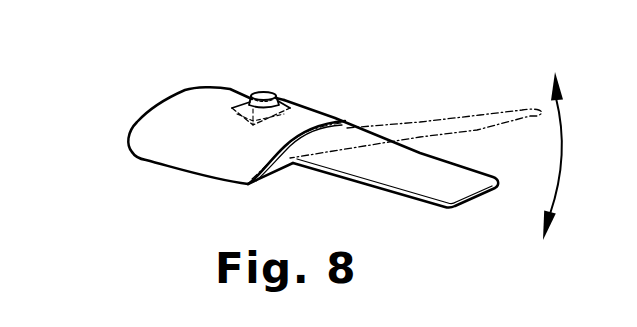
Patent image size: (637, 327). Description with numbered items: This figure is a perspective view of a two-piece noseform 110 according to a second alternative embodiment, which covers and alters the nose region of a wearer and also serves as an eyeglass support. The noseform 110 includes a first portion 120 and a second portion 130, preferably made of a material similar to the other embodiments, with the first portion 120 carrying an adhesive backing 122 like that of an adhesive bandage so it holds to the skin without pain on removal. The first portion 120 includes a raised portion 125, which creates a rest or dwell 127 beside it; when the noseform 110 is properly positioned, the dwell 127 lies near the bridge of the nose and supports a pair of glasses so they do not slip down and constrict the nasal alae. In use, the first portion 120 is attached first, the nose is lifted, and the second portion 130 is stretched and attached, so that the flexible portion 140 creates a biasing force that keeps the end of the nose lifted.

The noseform 110 is at (232, 145).
The first portion 120 is at (248, 98).
The adhesive backing 122 is at (141, 171).
The raised portion 125 is at (268, 94).
The dwell 127 is at (233, 107).
The second portion 130 is at (437, 190).
The flexible portion 140 is at (332, 140).